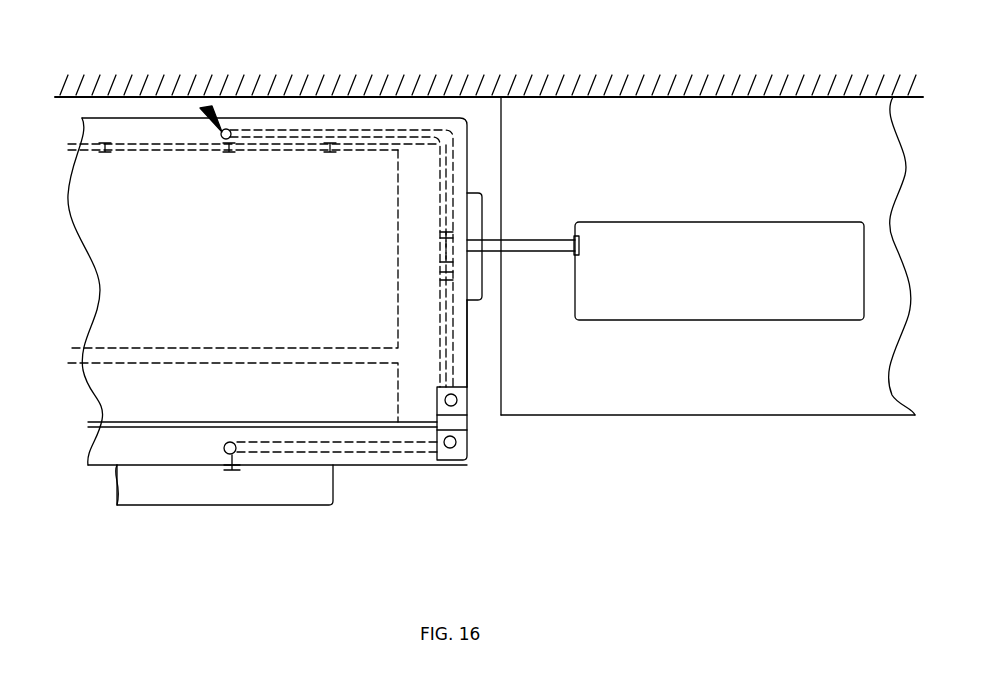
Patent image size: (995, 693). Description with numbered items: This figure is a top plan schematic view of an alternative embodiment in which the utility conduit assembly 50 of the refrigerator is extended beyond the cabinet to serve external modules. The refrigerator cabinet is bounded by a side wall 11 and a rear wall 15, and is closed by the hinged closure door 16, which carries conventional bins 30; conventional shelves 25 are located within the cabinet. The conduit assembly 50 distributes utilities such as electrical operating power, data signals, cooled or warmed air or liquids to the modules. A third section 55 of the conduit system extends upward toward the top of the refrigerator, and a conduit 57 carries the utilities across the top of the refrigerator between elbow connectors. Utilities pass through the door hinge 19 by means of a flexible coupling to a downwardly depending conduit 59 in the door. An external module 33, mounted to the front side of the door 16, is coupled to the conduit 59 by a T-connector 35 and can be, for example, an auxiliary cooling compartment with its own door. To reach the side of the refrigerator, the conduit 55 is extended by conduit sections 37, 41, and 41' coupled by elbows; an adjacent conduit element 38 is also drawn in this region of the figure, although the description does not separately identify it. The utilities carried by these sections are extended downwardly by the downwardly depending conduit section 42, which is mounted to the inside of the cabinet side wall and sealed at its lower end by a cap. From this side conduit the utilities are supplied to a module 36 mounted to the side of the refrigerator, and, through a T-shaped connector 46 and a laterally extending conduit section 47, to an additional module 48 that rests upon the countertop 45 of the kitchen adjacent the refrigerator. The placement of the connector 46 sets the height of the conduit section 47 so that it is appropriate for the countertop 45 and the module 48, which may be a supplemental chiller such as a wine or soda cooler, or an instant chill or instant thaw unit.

The side wall 11 is at (470, 348).
The rear wall 15 is at (95, 165).
The closure door 16 is at (385, 467).
The door hinge 19 is at (470, 435).
The shelves 25 is at (211, 282).
The bins 30 is at (211, 401).
The module 33 is at (200, 490).
The T-connector 35 is at (235, 470).
The module 36 is at (485, 265).
The conduit section 37 is at (326, 152).
The conduit 38 is at (440, 232).
The conduit section 41 is at (402, 302).
The conduit section 41' is at (337, 491).
The downwardly depending conduit section 42 is at (445, 258).
The countertop 45 is at (722, 383).
The T-shaped connector 46 is at (580, 248).
The conduit section 47 is at (535, 245).
The module 48 is at (767, 321).
The conduit assembly 50 is at (206, 112).
The third section 55 is at (222, 140).
The conduit 57 is at (462, 178).
The downwardly depending conduit 59 is at (230, 440).